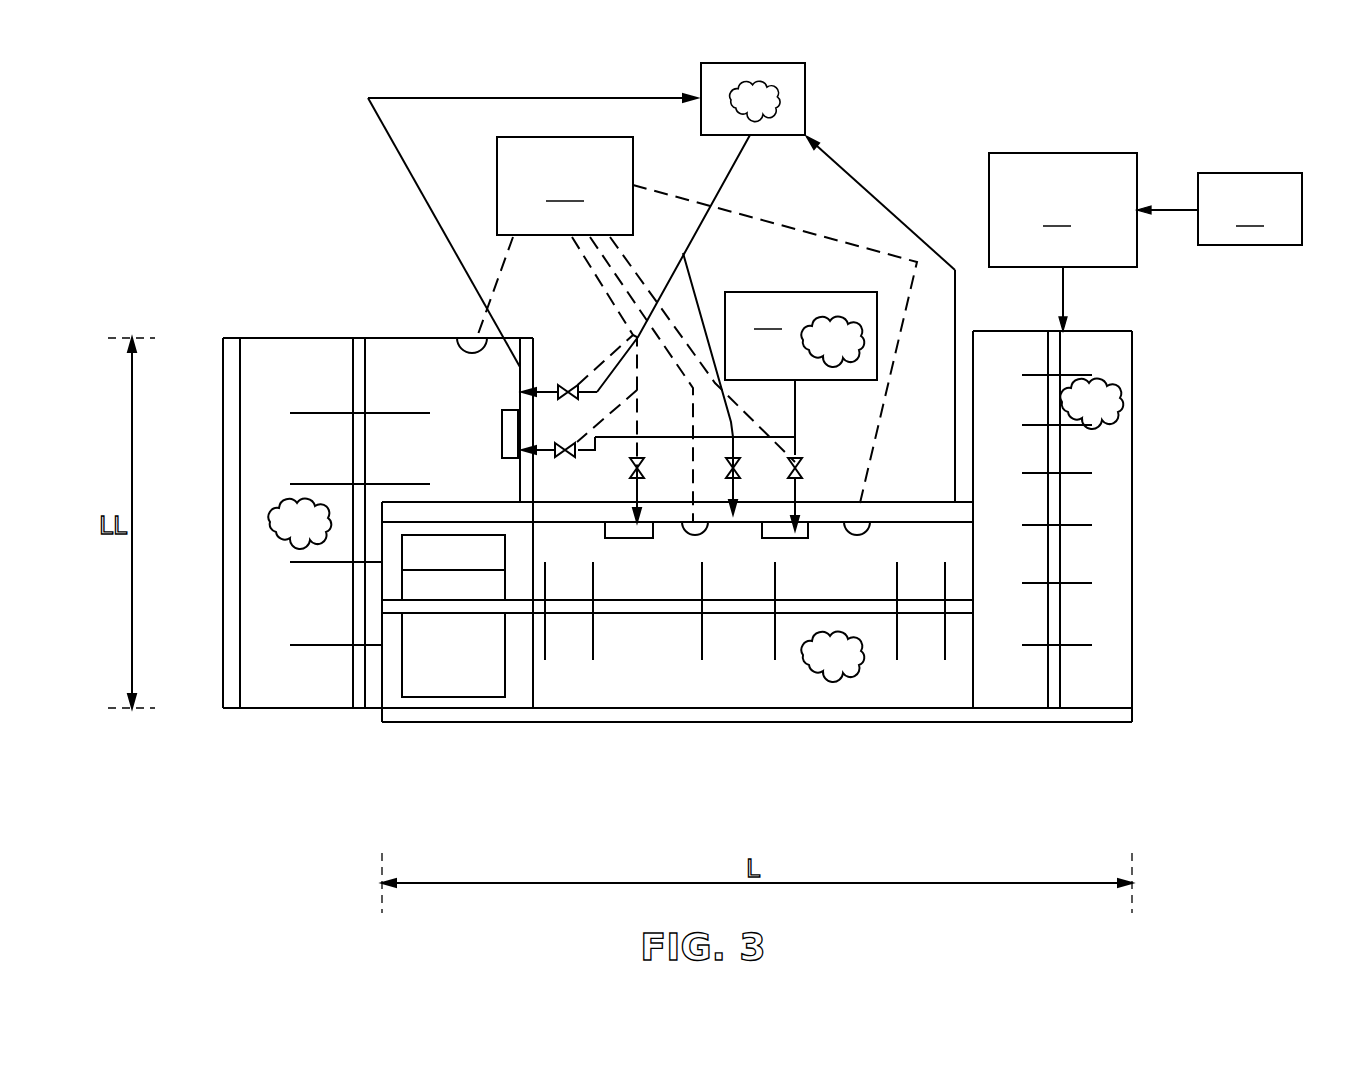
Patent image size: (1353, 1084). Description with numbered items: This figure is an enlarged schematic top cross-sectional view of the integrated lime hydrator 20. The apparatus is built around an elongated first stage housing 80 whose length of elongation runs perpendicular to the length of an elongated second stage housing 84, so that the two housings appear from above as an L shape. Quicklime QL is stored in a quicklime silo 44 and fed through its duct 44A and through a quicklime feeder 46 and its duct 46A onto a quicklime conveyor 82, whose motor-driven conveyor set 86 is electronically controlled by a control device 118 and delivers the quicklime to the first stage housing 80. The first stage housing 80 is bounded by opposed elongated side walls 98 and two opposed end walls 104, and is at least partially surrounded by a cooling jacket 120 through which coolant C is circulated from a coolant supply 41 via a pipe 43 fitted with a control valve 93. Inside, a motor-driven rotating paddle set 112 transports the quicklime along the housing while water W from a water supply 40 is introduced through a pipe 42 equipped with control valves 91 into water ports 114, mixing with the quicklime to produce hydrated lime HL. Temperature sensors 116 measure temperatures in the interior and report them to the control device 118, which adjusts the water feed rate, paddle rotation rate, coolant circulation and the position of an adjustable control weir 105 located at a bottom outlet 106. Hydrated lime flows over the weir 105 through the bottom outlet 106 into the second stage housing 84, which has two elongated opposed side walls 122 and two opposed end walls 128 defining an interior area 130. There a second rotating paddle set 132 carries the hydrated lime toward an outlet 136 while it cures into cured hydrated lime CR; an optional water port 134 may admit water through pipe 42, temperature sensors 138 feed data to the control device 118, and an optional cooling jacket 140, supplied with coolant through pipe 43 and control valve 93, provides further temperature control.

The integrated lime hydrator 20 is at (890, 172).
The water supply 40 is at (801, 336).
The coolant supply 41 is at (807, 76).
The pipe 42 is at (795, 405).
The pipe 43 is at (580, 96).
The quicklime silo 44 is at (1250, 209).
The duct 44A is at (1172, 208).
The quicklime feeder 46 is at (1063, 210).
The duct 46A is at (1065, 290).
The first stage housing 80 is at (768, 728).
The quicklime conveyor 82 is at (1145, 462).
The second stage housing 84 is at (347, 325).
The motor-driven conveyor set 86 is at (1085, 582).
The control valves 91 is at (574, 456).
The control valve 93 is at (573, 390).
The elongated side walls 98 is at (935, 530).
The end walls 104 is at (388, 672).
The adjustable control weir 105 is at (495, 678).
The bottom outlet 106 is at (505, 557).
The rotating paddle set 112 is at (593, 655).
The water ports 114 is at (630, 538).
The temperature sensors 116 is at (700, 536).
The control device 118 is at (697, 329).
The cooling jacket 120 is at (887, 513).
The side walls 122 is at (527, 338).
The end walls 128 is at (278, 337).
The interior area 130 is at (250, 465).
The rotating paddle set 132 is at (397, 406).
The water port 134 is at (500, 448).
The outlet 136 is at (230, 583).
The temperature sensors 138 is at (472, 354).
The cooling jacket 140 is at (536, 378).